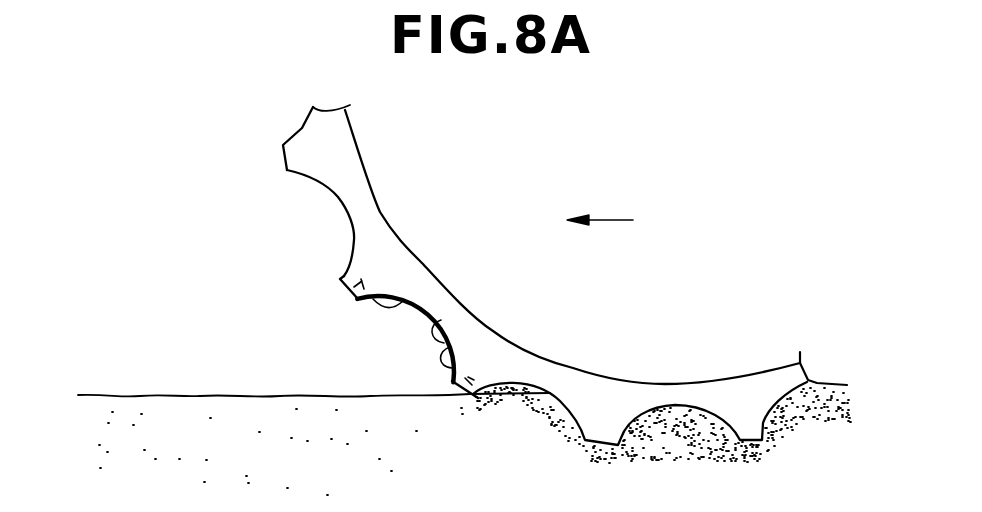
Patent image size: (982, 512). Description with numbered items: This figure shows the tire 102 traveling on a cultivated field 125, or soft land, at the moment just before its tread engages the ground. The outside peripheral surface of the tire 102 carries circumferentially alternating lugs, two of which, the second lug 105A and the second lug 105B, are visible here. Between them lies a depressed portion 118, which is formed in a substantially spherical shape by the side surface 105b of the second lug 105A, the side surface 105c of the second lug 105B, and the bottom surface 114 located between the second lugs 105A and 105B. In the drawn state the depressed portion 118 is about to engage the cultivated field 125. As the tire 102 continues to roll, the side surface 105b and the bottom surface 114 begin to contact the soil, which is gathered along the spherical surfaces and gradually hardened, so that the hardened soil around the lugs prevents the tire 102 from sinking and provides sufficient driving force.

The tire 102 is at (304, 130).
The second lug 105A is at (463, 400).
The second lug 105B is at (356, 299).
The side surface of the second lug 105b is at (447, 339).
The side surface of the second lug 105c is at (405, 298).
The bottom surface 114 is at (434, 320).
The depressed portion 118 is at (417, 337).
The cultivated field 125 is at (130, 396).